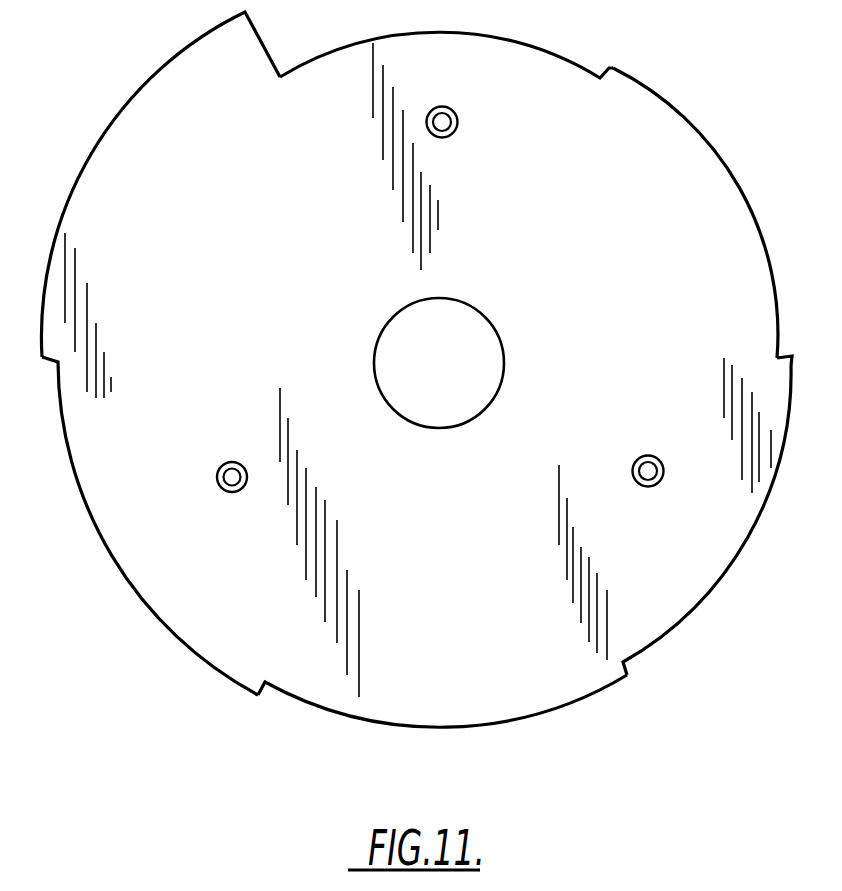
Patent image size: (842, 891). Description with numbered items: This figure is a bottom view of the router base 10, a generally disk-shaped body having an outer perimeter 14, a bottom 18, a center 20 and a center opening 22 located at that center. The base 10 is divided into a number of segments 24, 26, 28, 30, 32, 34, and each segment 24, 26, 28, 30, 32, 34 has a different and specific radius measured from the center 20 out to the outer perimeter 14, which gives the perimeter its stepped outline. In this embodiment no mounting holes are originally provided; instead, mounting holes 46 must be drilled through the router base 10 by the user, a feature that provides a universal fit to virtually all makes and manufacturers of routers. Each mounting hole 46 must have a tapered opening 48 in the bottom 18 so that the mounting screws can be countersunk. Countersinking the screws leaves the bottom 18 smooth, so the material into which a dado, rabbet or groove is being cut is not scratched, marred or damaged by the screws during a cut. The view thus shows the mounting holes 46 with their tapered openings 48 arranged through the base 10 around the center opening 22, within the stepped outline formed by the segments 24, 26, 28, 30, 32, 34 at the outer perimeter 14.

The router base 10 is at (166, 42).
The outer perimeter 14 is at (750, 170).
The bottom 18 is at (667, 349).
The center 20 is at (417, 382).
The center opening 22 is at (493, 323).
The segment 24 is at (446, 39).
The segment 26 is at (705, 213).
The segment 28 is at (663, 472).
The segment 30 is at (442, 725).
The segment 32 is at (150, 526).
The segment 34 is at (151, 184).
The mounting hole 46 is at (457, 128).
The tapered opening 48 is at (453, 110).